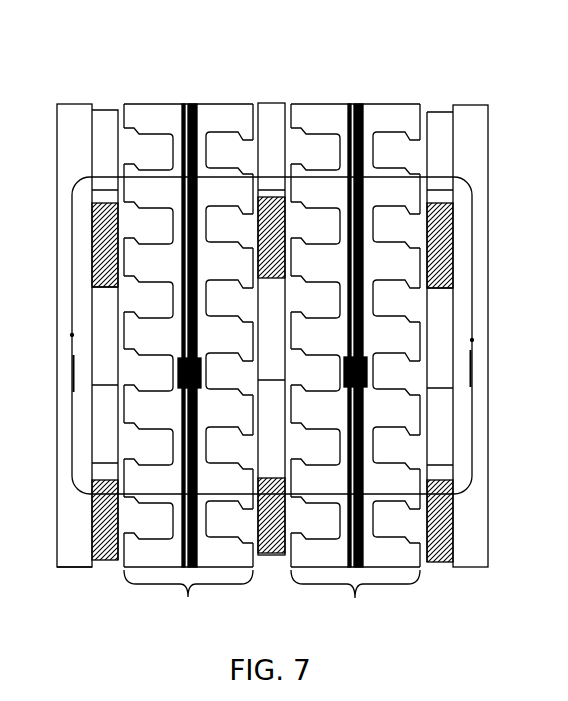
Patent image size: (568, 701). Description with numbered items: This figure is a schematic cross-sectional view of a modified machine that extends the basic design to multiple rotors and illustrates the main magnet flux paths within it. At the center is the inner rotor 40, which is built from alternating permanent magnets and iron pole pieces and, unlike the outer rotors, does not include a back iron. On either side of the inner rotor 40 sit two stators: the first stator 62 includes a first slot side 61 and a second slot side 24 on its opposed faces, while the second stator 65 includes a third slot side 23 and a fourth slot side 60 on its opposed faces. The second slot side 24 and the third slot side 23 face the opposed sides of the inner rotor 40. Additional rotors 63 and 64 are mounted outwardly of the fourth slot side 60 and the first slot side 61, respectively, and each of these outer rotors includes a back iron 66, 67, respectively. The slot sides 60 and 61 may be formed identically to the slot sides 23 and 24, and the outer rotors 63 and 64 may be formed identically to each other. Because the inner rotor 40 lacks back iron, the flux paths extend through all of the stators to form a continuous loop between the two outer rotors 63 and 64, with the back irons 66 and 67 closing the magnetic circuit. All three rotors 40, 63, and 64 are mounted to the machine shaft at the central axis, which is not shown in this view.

The third slot side 23 is at (330, 103).
The second slot side 24 is at (225, 98).
The inner rotor 40 is at (273, 100).
The fourth slot side 60 is at (400, 104).
The first slot side 61 is at (152, 103).
The first stator 62 is at (188, 599).
The additional rotor 63 is at (476, 105).
The additional rotor 64 is at (75, 103).
The second stator 65 is at (355, 599).
The back iron 66 is at (472, 158).
The back iron 67 is at (70, 560).